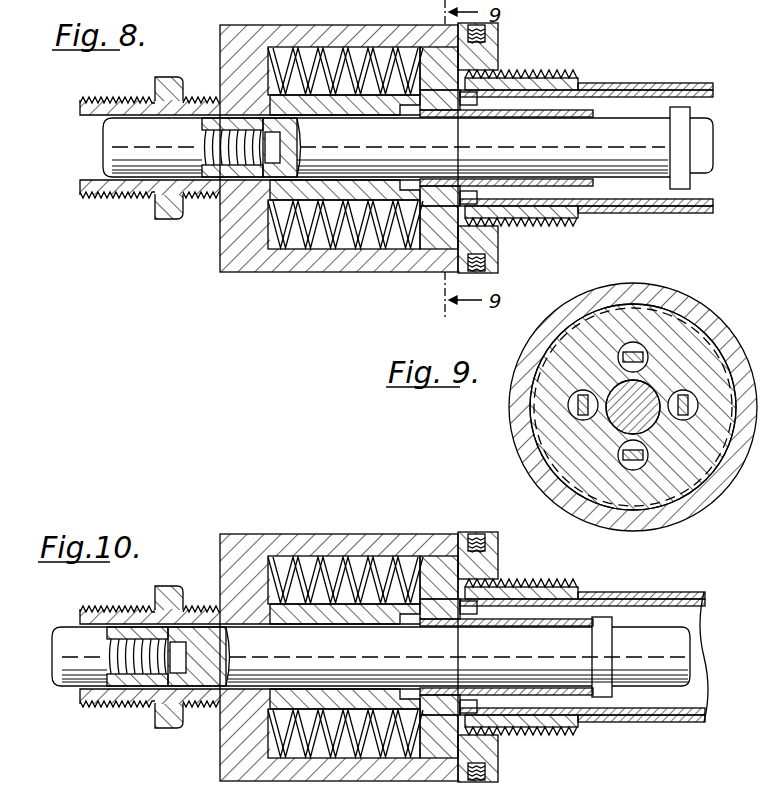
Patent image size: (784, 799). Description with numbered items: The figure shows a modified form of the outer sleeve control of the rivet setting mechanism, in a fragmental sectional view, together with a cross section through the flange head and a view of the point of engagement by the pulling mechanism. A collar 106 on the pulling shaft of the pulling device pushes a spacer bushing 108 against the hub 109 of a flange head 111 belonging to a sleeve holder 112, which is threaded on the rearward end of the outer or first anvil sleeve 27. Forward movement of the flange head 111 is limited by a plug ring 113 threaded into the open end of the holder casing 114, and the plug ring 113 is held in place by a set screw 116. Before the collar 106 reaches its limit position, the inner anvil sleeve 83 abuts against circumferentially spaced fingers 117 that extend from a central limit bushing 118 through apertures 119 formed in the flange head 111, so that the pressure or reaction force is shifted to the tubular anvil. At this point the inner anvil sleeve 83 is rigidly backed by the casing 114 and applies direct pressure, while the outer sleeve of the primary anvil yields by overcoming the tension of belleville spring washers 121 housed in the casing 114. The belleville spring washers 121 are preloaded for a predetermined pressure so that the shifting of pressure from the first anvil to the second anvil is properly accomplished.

In FIG. 8, the outer or first anvil sleeve 27 is at (672, 86).
In FIG. 10, the outer or first anvil sleeve 27 is at (666, 600).
In FIG. 8, the inner anvil sleeve 83 is at (719, 97).
In FIG. 10, the inner anvil sleeve 83 is at (707, 608).
In FIG. 8, the collar 106 is at (691, 112).
In FIG. 10, the collar 106 is at (600, 625).
In FIG. 8, the spacer bushing 108 is at (593, 109).
In FIG. 10, the spacer bushing 108 is at (584, 619).
In FIG. 8, the hub 109 is at (445, 112).
In FIG. 10, the hub 109 is at (446, 692).
In FIG. 8, the flange head 111 is at (437, 252).
In FIG. 9, the flange head 111 is at (555, 441).
In FIG. 10, the flange head 111 is at (439, 657).
In FIG. 8, the sleeve holder 112 is at (550, 82).
In FIG. 10, the sleeve holder 112 is at (521, 657).
In FIG. 8, the plug ring 113 is at (490, 56).
In FIG. 10, the plug ring 113 is at (500, 566).
In FIG. 8, the holder casing 114 is at (347, 262).
In FIG. 9, the holder casing 114 is at (598, 298).
In FIG. 10, the holder casing 114 is at (339, 657).
In FIG. 8, the set screw 116 is at (489, 38).
In FIG. 10, the set screw 116 is at (479, 536).
In FIG. 8, the fingers 117 is at (445, 101).
In FIG. 9, the fingers 117 is at (641, 352).
In FIG. 10, the fingers 117 is at (447, 603).
In FIG. 10, the central limit bushing 118 is at (356, 618).
In FIG. 9, the apertures 119 is at (645, 462).
In FIG. 10, the apertures 119 is at (427, 602).
In FIG. 10, the belleville spring washers 121 is at (315, 560).